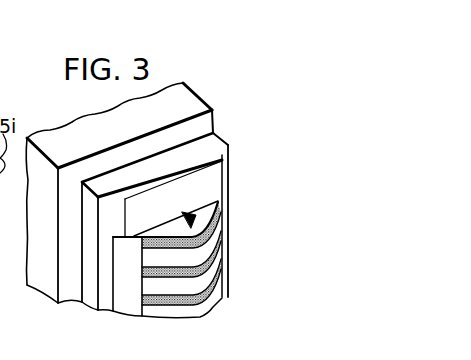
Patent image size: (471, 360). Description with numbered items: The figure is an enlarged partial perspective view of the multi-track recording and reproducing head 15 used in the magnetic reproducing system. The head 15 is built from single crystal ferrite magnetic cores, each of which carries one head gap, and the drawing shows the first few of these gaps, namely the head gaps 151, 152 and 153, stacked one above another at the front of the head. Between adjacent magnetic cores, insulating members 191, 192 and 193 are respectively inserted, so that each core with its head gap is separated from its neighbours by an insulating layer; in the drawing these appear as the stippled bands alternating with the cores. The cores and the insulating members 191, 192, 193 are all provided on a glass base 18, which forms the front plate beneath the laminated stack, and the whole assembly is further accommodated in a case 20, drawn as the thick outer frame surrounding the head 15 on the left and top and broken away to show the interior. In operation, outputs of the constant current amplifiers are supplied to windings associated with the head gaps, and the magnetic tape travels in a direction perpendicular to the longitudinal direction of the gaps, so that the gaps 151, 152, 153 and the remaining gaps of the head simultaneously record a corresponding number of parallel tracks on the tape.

The multi-track recording and reproducing head 15 is at (225, 94).
The head gap 151 is at (219, 203).
The head gap 152 is at (211, 267).
The head gap 153 is at (215, 297).
The insulating member 191 is at (213, 239).
The insulating member 192 is at (165, 283).
The insulating member 193 is at (178, 312).
The glass base 18 is at (124, 303).
The case 20 is at (62, 278).